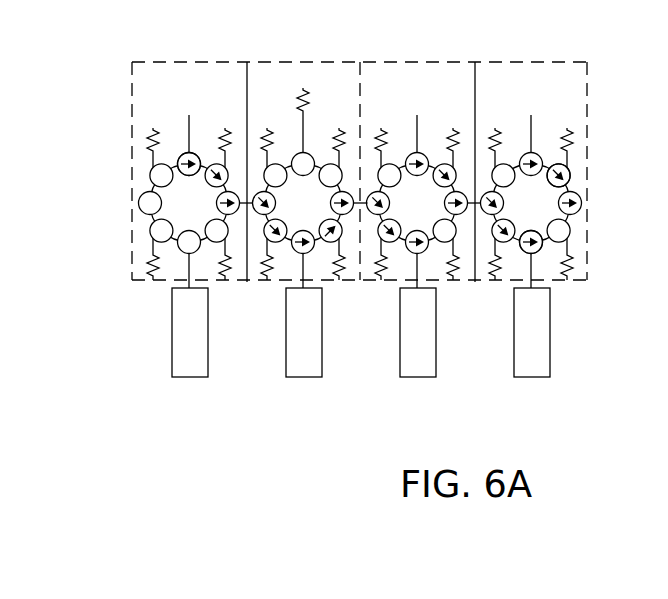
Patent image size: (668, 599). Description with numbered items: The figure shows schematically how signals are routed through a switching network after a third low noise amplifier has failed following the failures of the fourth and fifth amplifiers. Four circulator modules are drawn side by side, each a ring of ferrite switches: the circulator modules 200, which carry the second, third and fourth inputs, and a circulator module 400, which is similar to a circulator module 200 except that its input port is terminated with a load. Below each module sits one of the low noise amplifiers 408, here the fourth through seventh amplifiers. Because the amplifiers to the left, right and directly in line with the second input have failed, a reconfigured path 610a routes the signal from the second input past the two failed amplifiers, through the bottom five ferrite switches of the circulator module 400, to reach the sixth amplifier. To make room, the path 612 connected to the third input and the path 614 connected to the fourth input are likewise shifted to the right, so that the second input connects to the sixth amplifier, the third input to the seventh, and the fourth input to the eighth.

The circulator module 200 is at (180, 62).
The circulator module 400 is at (298, 62).
The amplifier 408 is at (190, 377).
The reconfigured path 610a is at (178, 165).
The path 612 is at (543, 238).
The path 614 is at (568, 176).